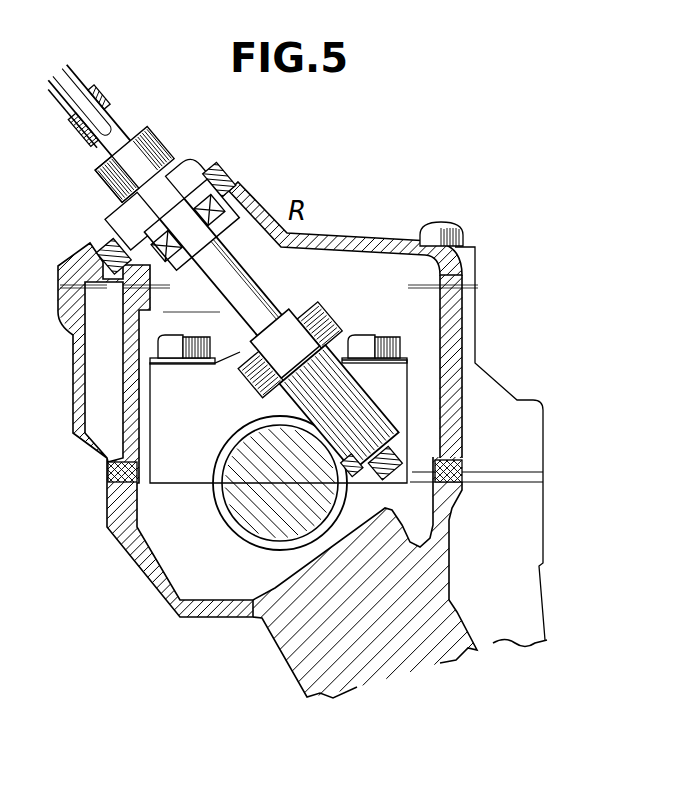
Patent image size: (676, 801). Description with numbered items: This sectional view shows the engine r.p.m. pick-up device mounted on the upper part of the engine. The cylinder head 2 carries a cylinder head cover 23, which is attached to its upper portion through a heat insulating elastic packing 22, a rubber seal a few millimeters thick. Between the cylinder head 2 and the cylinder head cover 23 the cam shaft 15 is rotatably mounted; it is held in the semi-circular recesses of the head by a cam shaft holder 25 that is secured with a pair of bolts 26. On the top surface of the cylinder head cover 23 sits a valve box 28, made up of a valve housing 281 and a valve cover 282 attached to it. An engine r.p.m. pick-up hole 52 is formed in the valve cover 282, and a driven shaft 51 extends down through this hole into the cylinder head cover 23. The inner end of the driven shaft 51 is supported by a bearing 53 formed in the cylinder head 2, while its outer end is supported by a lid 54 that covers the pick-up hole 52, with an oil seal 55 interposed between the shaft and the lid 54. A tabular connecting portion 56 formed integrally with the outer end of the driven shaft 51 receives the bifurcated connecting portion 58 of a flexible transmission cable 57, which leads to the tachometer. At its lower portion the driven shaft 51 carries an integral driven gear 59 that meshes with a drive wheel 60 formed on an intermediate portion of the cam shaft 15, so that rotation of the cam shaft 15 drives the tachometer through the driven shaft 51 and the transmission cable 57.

The cylinder head 2 is at (538, 606).
The cam shaft 15 is at (288, 493).
The heat insulating elastic packing 22 is at (110, 475).
The cylinder head cover 23 is at (460, 415).
The cam shaft holder 25 is at (207, 421).
The bolt 26 is at (372, 335).
The valve box 28 is at (490, 304).
The valve housing 281 is at (443, 346).
The valve cover 282 is at (376, 238).
The driven shaft 51 is at (250, 283).
The engine r.p.m. pick-up hole 52 is at (232, 184).
The bearing 53 is at (400, 446).
The lid 54 is at (197, 175).
The oil seal 55 is at (214, 236).
The tabular connecting portion 56 is at (127, 200).
The flexible transmission cable 57 is at (104, 103).
The bifurcated connecting portion 58 is at (150, 142).
The driven gear 59 is at (350, 390).
The drive wheel 60 is at (240, 530).